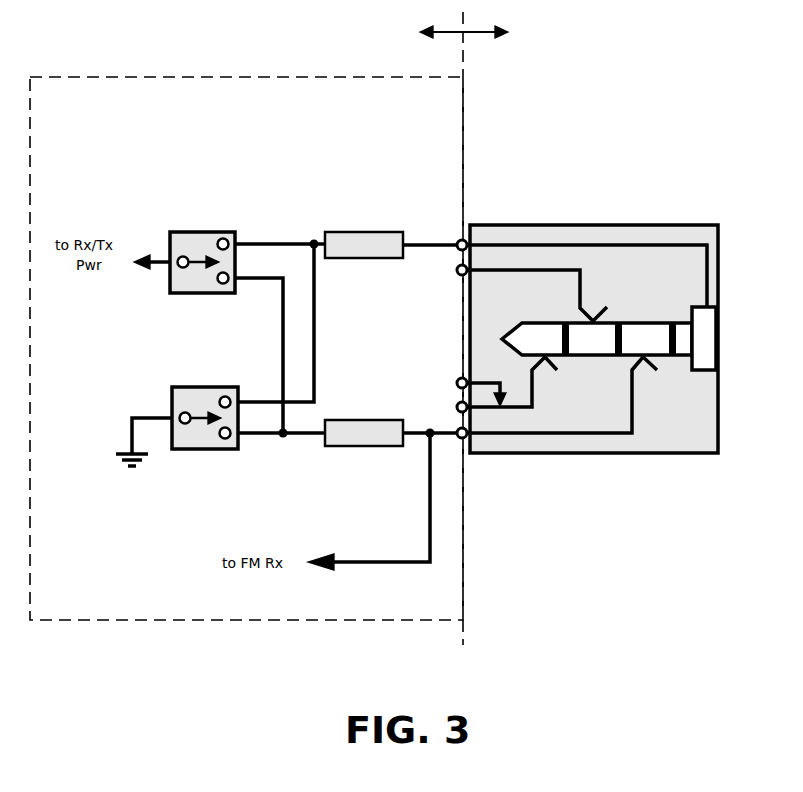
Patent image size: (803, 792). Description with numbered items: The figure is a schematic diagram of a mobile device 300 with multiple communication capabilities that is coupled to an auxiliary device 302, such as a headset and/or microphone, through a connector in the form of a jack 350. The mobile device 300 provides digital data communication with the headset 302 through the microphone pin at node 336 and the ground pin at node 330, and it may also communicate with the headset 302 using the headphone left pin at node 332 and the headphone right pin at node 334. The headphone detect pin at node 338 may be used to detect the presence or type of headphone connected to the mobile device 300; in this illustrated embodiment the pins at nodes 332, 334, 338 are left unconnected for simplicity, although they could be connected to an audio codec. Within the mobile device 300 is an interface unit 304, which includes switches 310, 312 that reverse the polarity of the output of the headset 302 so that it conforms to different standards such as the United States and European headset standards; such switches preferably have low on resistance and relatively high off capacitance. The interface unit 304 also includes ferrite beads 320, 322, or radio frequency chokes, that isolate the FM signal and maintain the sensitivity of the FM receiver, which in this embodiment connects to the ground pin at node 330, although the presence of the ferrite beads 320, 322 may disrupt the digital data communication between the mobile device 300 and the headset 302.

The mobile device 300 is at (438, 32).
The auxiliary device 302 is at (512, 328).
The interface unit 304 is at (246, 348).
The switch 310 is at (202, 248).
The switch 312 is at (205, 403).
The ferrite bead 320 is at (364, 230).
The ferrite bead 322 is at (364, 419).
The ground pin node 330 is at (446, 446).
The headphone left pin node 332 is at (446, 395).
The headphone right pin node 334 is at (442, 278).
The microphone pin node 336 is at (450, 231).
The headphone detect pin node 338 is at (446, 369).
The jack 350 is at (570, 454).